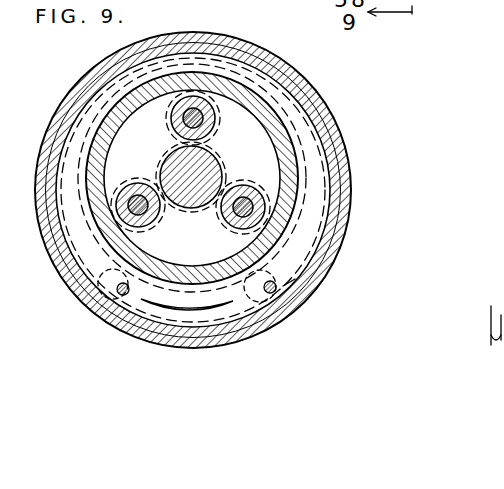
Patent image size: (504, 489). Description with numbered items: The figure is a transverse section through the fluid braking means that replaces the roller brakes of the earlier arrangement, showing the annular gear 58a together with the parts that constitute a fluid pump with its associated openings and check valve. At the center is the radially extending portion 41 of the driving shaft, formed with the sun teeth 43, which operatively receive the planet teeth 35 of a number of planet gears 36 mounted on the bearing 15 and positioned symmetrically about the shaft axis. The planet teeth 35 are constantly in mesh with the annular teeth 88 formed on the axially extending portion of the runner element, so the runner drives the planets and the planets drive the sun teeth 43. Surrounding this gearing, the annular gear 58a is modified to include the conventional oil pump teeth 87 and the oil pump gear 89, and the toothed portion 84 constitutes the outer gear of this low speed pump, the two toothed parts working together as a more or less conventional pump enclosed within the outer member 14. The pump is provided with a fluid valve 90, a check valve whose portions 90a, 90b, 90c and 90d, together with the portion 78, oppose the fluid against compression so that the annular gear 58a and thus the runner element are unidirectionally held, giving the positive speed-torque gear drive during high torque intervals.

The outer sheath 14 is at (345, 175).
The bearing 15 is at (252, 209).
The planet teeth 35 is at (173, 141).
The planet gears 36 is at (200, 130).
The radially extending portion 41 is at (172, 164).
The sun teeth 43 is at (191, 191).
The annular gear 58a is at (278, 112).
The pump portion 78 is at (231, 232).
The toothed portion 84 is at (283, 286).
The oil pump teeth 87 is at (318, 205).
The annular teeth 88 is at (275, 143).
The oil pump gear 89 is at (302, 157).
The fluid valve 90 is at (220, 307).
The valve portion 90a is at (99, 279).
The valve portion 90b is at (121, 295).
The valve portion 90c is at (265, 270).
The valve portion 90d is at (268, 288).